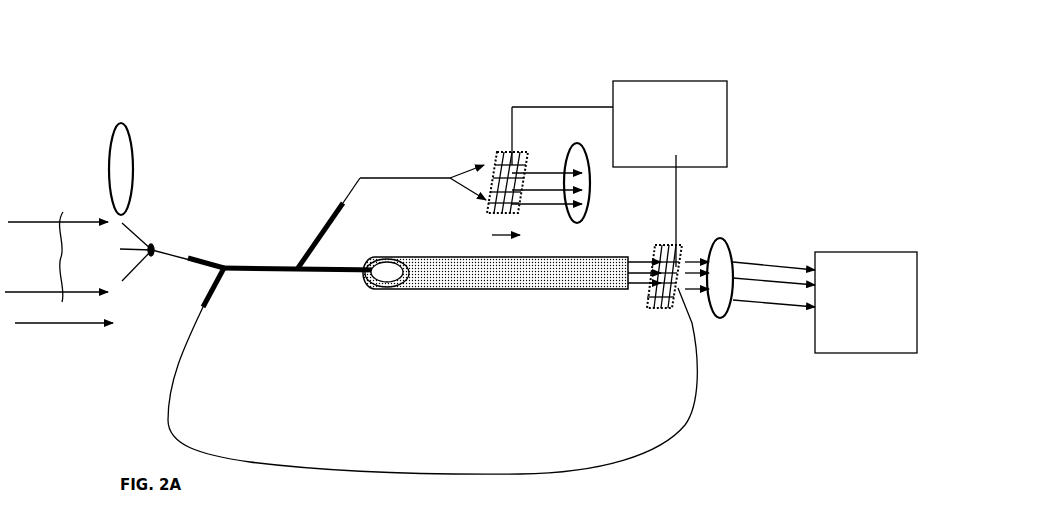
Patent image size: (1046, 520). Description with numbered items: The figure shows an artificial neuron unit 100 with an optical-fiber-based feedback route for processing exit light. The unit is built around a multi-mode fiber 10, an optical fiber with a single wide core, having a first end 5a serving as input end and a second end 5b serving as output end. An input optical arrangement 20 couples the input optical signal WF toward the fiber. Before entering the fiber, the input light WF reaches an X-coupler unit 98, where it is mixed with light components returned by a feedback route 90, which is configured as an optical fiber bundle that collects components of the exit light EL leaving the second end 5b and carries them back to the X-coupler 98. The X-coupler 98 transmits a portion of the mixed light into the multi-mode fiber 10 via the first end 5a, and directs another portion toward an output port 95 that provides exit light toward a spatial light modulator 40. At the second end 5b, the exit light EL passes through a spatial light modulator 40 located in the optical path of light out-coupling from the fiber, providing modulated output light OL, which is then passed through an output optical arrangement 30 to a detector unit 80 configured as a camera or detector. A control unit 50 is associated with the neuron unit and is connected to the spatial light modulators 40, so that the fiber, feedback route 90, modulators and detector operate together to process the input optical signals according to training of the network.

The artificial neuron unit 100 is at (291, 125).
The input optical arrangement 20 is at (115, 200).
The input optical signal WF is at (59, 253).
The X-coupler unit 98 is at (255, 265).
The output port 95 is at (358, 175).
The spatial light modulator 40 is at (498, 147).
The output optical arrangement 30 is at (577, 133).
The control unit 50 is at (619, 174).
The multi-mode fiber 10 is at (482, 293).
The first end 5a is at (383, 282).
The second end 5b is at (629, 284).
The exit light EL is at (642, 256).
The output light OL is at (766, 258).
The detector unit 80 is at (866, 302).
The feedback route 90 is at (688, 433).